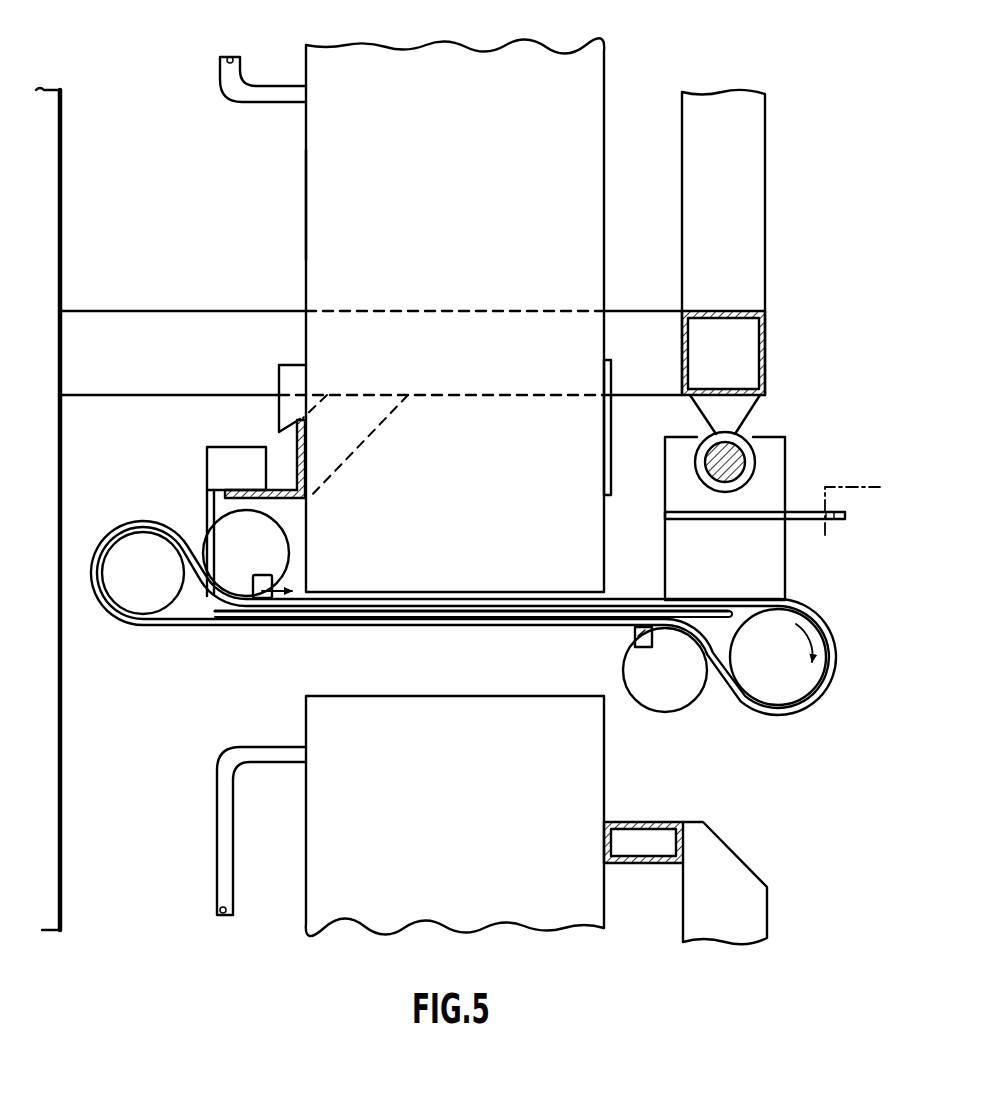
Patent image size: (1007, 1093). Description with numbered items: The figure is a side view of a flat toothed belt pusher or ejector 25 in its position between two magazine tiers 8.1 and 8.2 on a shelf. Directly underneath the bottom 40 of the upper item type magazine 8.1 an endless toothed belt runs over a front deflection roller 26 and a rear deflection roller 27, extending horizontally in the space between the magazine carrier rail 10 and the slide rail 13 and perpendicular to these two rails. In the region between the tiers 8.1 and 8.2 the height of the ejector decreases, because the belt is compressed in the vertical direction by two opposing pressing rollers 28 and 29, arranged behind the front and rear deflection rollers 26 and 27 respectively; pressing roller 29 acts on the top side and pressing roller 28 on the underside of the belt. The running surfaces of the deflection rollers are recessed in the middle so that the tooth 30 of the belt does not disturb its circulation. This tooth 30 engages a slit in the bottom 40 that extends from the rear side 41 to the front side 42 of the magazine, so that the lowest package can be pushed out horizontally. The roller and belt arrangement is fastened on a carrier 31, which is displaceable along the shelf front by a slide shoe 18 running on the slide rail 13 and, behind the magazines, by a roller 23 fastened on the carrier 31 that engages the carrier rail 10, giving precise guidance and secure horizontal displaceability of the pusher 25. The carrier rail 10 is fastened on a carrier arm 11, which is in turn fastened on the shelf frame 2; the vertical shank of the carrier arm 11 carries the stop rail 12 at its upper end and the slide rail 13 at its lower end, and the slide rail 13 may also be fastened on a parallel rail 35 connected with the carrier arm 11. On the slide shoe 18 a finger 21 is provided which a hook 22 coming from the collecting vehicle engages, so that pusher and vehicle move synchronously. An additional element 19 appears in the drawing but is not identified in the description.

The shelf frame 2 is at (62, 128).
The magazine tier 8.1 is at (320, 128).
The magazine tier 8.2 is at (338, 933).
The carrier rail 10 is at (298, 438).
The carrier arm 11 is at (121, 326).
The stop rail 12 is at (648, 822).
The slide rail 13 is at (735, 440).
The slide shoe 18 is at (778, 575).
The stop 19 is at (294, 360).
The finger 21 is at (187, 625).
The hook 22 is at (826, 486).
The roller 23 is at (235, 462).
The toothed belt pusher 25 is at (778, 733).
The front deflection roller 26 is at (802, 690).
The rear deflection roller 27 is at (150, 605).
The pressing roller 28 is at (670, 701).
The pressing roller 29 is at (214, 540).
The tooth 30 is at (639, 628).
The carrier 31 is at (210, 615).
The rail 35 is at (767, 340).
The bottom 40 is at (410, 592).
The rear side 41 is at (306, 203).
The front side 42 is at (606, 62).